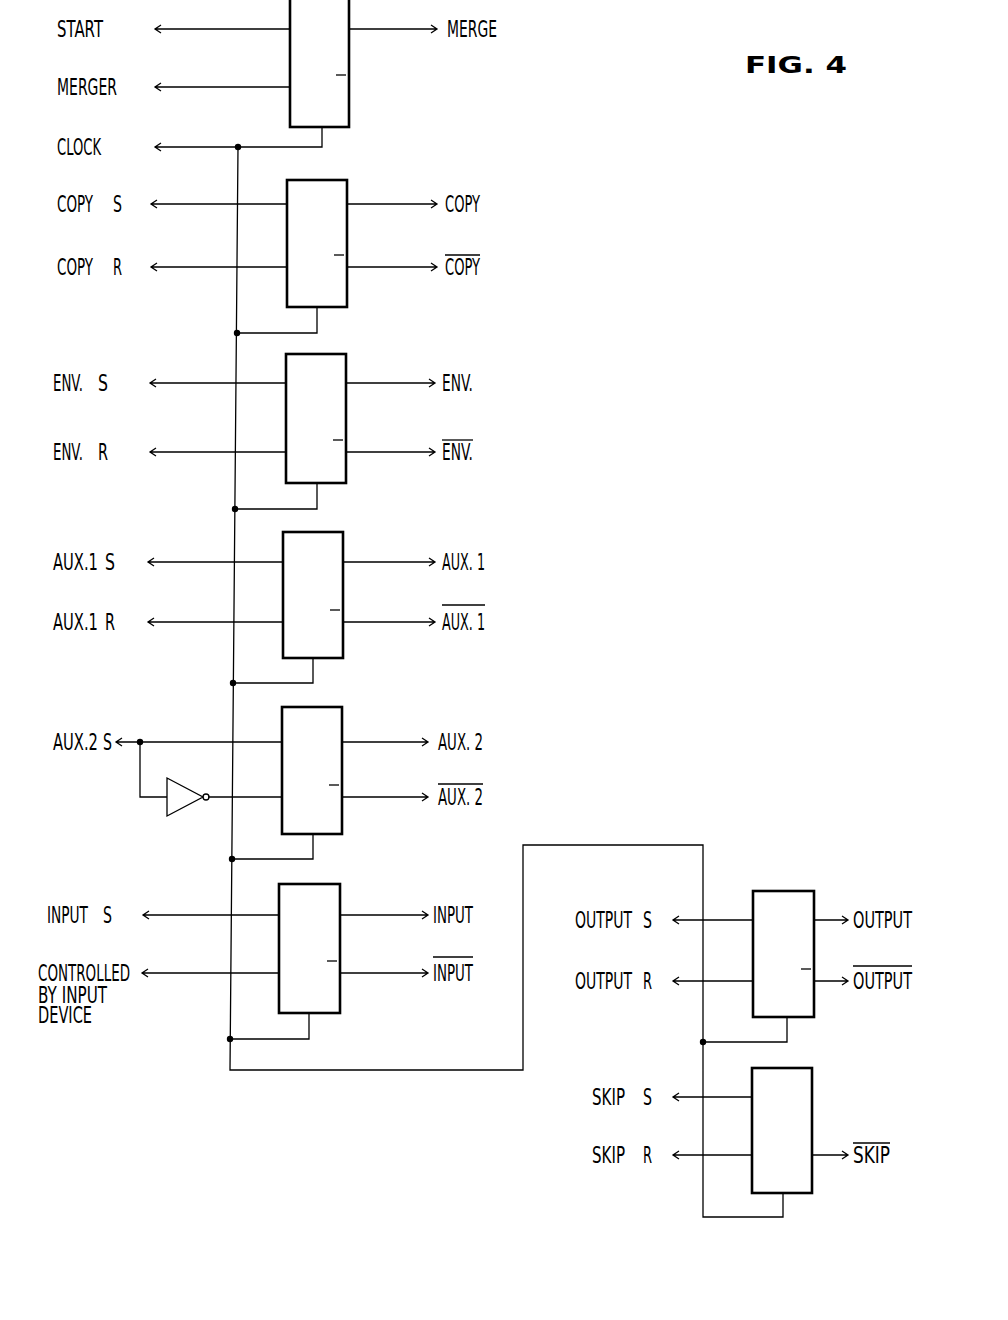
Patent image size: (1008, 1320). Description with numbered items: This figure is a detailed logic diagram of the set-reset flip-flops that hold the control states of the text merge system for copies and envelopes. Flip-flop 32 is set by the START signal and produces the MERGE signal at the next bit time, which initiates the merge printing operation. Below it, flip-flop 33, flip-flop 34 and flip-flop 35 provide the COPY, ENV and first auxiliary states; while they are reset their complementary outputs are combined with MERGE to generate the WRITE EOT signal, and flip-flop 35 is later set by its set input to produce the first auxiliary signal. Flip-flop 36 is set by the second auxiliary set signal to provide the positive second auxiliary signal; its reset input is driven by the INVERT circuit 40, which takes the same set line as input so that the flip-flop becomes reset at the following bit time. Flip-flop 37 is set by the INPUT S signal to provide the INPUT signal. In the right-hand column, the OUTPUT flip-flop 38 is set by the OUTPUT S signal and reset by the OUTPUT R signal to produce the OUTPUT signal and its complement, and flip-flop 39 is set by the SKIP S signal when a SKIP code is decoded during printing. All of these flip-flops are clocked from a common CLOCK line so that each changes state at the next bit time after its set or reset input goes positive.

The flip-flop 32 is at (345, 61).
The flip-flop 33 is at (345, 244).
The flip-flop 34 is at (344, 420).
The flip-flop 35 is at (341, 598).
The flip-flop 36 is at (340, 776).
The flip-flop 37 is at (338, 939).
The OUTPUT flip-flop 38 is at (812, 901).
The flip-flop 39 is at (810, 1080).
The INVERT circuit 40 is at (177, 816).